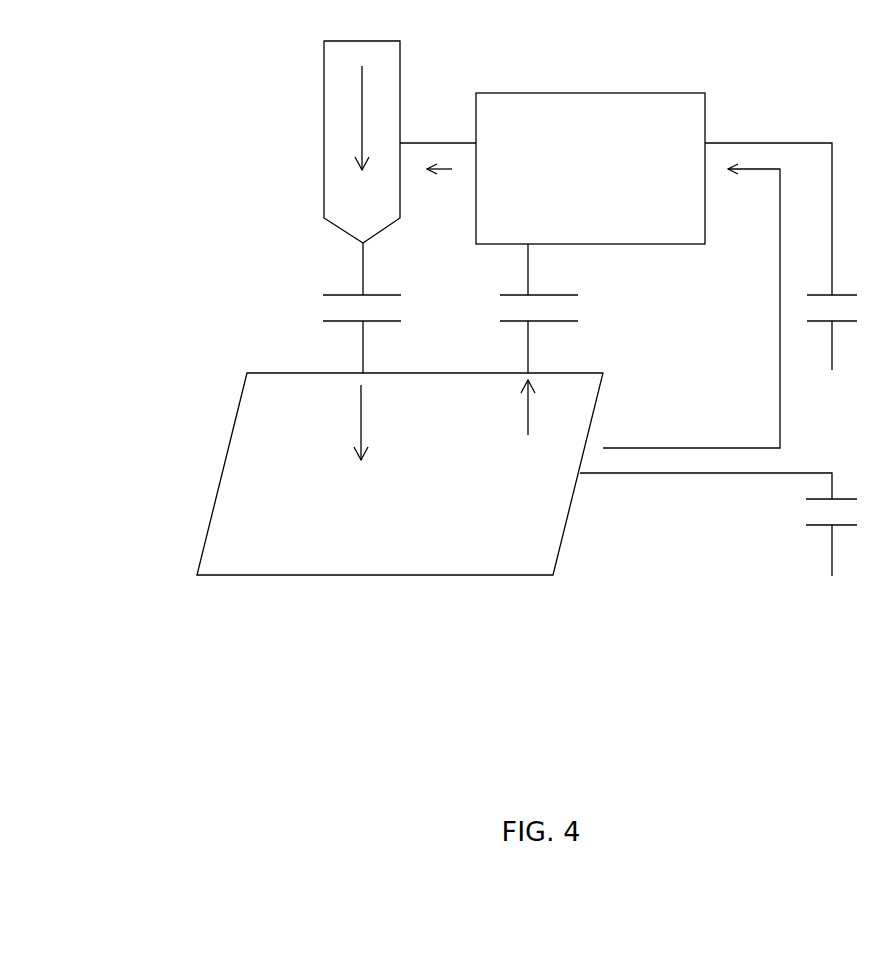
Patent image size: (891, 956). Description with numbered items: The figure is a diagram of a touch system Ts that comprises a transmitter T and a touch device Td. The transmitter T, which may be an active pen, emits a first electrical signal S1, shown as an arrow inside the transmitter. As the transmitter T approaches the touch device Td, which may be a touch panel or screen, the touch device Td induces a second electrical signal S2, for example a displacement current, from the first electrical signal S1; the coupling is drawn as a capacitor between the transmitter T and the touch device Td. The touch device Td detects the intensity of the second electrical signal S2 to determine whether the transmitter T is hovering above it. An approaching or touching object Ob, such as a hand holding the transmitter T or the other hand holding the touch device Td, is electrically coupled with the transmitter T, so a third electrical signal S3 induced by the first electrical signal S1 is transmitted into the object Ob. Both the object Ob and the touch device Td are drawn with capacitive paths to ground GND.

The touch system Ts is at (185, 259).
The transmitter T is at (340, 213).
The touch device Td is at (288, 392).
The first electrical signal S1 is at (346, 118).
The second electrical signal S2 is at (347, 422).
The third electrical signal S3 is at (517, 407).
The approaching or touching object Ob is at (590, 168).
The ground GND is at (718, 378).